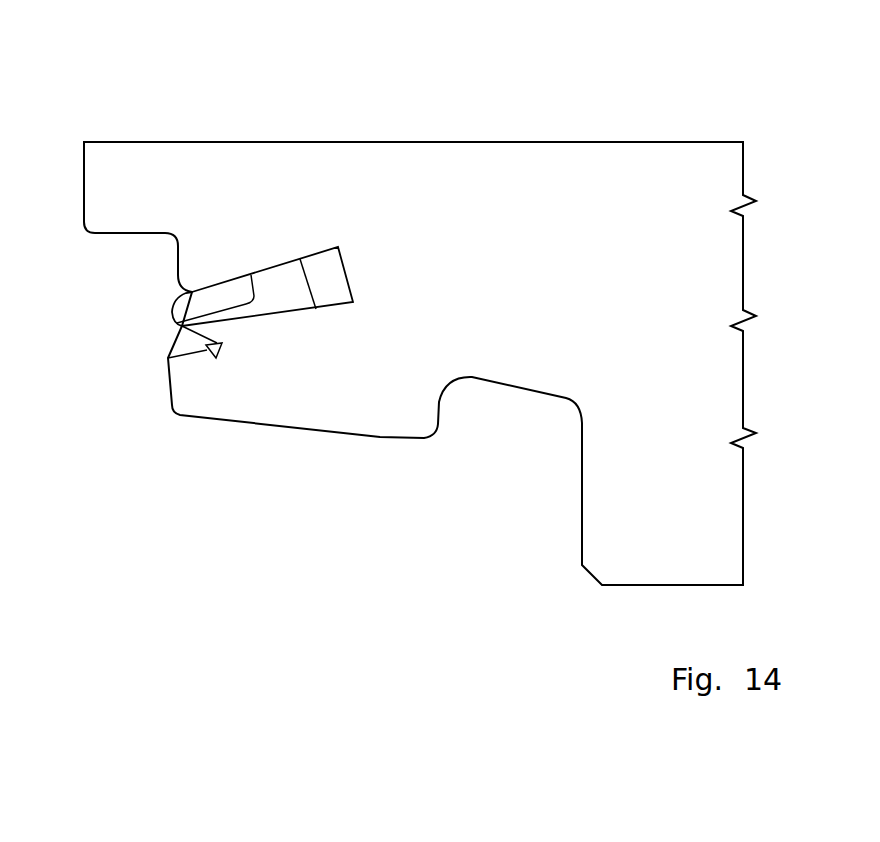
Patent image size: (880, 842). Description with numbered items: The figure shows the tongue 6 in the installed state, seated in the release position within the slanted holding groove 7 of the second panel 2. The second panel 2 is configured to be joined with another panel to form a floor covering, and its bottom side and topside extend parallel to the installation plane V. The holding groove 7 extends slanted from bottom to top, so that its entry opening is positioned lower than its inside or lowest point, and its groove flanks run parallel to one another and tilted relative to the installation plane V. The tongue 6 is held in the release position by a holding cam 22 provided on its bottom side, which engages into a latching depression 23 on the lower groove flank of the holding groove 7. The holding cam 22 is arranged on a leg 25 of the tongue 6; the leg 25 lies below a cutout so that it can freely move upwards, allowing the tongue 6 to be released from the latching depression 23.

The second panel 2 is at (660, 165).
The installation plane V is at (425, 143).
The tongue 6 is at (275, 277).
The holding groove 7 is at (353, 302).
The holding cam 22 is at (210, 347).
The latching depression 23 is at (222, 347).
The leg 25 is at (178, 346).